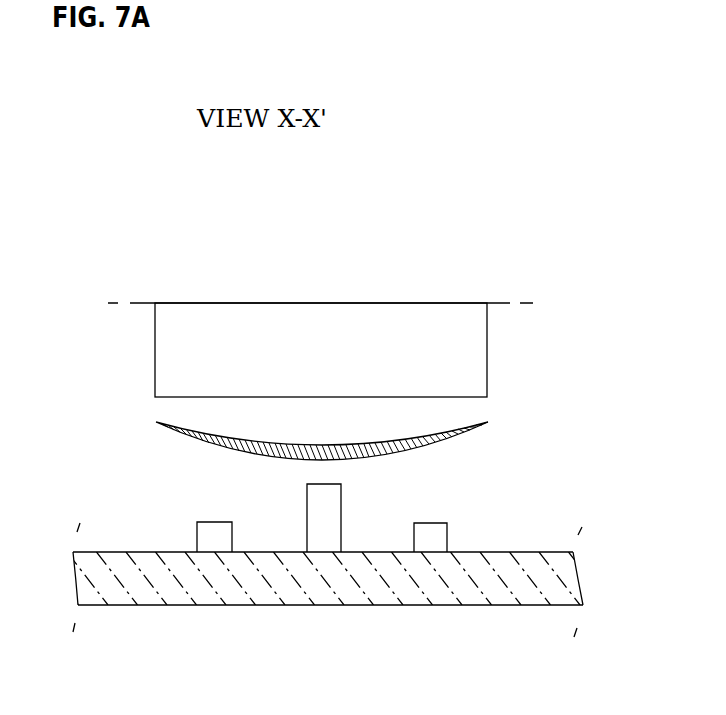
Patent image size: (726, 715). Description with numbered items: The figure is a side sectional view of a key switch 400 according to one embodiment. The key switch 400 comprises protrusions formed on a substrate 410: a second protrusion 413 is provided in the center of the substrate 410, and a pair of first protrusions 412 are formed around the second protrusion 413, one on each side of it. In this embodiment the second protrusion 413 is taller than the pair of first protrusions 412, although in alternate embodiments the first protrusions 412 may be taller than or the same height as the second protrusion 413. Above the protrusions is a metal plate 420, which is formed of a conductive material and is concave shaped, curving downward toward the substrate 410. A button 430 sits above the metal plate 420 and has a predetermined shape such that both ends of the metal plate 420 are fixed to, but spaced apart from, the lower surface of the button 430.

The key switch 400 is at (452, 240).
The substrate 410 is at (447, 597).
The first protrusions 412 is at (215, 537).
The second protrusion 413 is at (326, 532).
The metal plate 420 is at (197, 435).
The button 430 is at (468, 357).